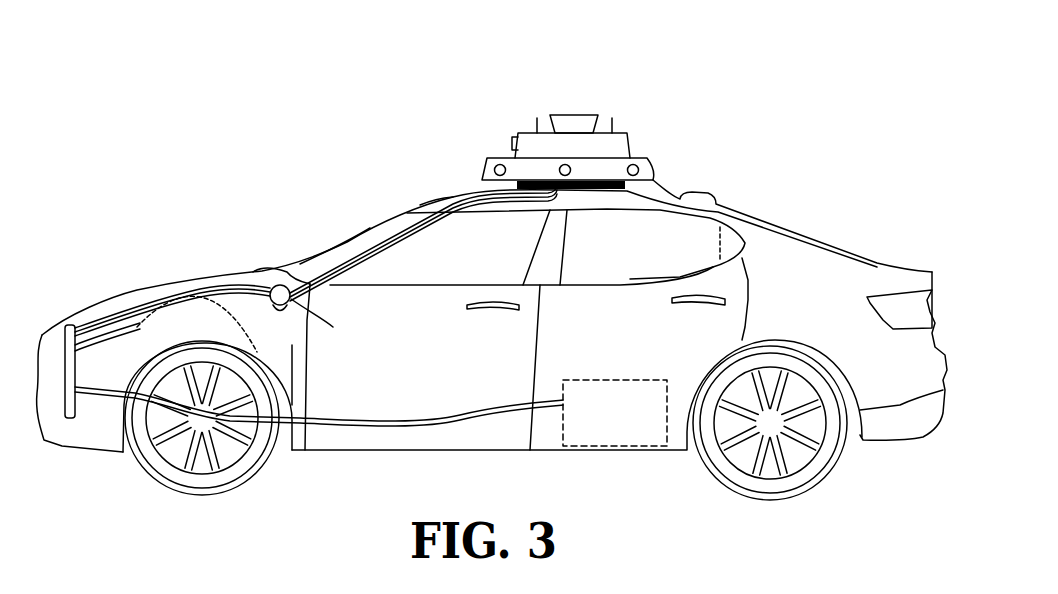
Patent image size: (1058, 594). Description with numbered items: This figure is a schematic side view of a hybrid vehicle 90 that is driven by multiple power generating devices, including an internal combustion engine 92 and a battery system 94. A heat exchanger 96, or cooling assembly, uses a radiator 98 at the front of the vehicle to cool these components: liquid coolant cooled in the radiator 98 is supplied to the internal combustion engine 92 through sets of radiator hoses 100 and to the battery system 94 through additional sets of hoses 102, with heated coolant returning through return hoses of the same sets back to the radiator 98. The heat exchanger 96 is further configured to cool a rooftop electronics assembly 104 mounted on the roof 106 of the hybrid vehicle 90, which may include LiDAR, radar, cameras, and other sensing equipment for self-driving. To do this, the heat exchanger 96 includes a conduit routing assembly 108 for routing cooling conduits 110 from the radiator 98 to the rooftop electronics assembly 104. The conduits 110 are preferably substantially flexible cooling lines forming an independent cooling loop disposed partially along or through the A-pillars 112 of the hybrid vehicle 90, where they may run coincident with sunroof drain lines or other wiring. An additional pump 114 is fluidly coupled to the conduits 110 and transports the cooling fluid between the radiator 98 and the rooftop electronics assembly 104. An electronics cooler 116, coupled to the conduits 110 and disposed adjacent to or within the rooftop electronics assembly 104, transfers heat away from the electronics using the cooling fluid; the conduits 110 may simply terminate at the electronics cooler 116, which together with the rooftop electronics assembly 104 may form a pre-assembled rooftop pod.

The hybrid vehicle 90 is at (265, 117).
The internal combustion engine 92 is at (213, 297).
The battery system 94 is at (588, 380).
The heat exchanger 96 is at (143, 262).
The radiator 98 is at (74, 326).
The radiator hoses 100 is at (118, 323).
The hoses 102 is at (333, 418).
The rooftop electronics assembly 104 is at (522, 134).
The roof 106 is at (452, 197).
The conduit routing assembly 108 is at (347, 241).
The conduits 110 is at (287, 284).
The A-pillars 112 is at (352, 247).
The pump 114 is at (333, 327).
The electronics cooler 116 is at (590, 191).